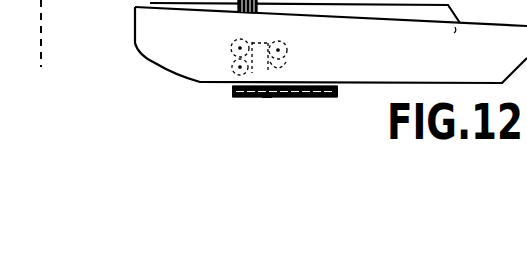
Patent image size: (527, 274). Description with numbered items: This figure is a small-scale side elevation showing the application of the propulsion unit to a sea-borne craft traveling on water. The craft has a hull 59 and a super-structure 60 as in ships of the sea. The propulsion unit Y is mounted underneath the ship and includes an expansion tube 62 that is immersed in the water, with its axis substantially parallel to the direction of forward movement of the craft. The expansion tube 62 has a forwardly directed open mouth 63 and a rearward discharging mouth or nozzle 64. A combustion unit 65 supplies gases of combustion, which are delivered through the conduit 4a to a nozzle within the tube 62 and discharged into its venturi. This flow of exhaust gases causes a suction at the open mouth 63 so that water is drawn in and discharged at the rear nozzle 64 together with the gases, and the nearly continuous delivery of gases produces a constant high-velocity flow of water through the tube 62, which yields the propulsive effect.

The hull 59 is at (165, 48).
The super-structure 60 is at (236, 5).
The combustion unit 65 is at (240, 25).
The conduit 4a is at (259, 83).
The expansion tube 62 is at (290, 100).
The open mouth 63 is at (233, 90).
The discharging mouth or nozzle 64 is at (339, 98).
The propulsion unit y is at (268, 99).